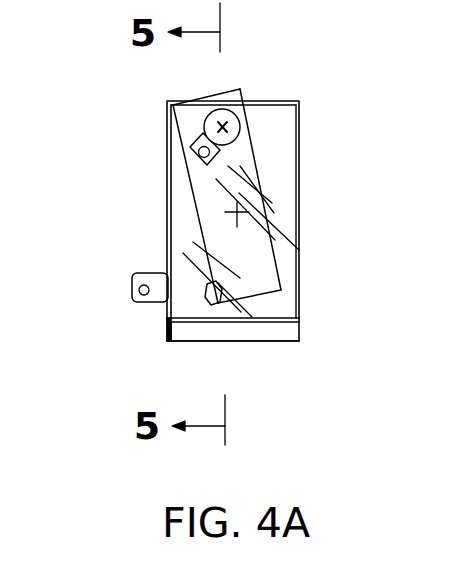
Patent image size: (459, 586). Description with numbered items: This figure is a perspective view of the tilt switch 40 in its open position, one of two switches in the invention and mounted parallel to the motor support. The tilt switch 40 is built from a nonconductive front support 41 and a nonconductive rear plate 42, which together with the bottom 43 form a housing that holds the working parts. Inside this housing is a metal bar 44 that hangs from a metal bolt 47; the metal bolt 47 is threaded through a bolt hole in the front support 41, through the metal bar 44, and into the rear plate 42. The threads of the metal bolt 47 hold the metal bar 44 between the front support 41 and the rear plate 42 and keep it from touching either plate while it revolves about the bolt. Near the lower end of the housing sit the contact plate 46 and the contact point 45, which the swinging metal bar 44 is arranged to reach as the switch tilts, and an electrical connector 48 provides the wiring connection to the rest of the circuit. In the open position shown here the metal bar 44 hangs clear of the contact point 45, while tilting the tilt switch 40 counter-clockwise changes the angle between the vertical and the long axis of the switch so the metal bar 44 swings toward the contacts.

The tilt switch 40 is at (138, 230).
The nonconductive front support 41 is at (183, 203).
The nonconductive rear plate 42 is at (298, 101).
The bottom 43 is at (302, 338).
The metal bar 44 is at (240, 89).
The contact point 45 is at (205, 291).
The contact plate 46 is at (168, 308).
The metal bolt 47 is at (222, 127).
The electrical connector 48 is at (196, 148).